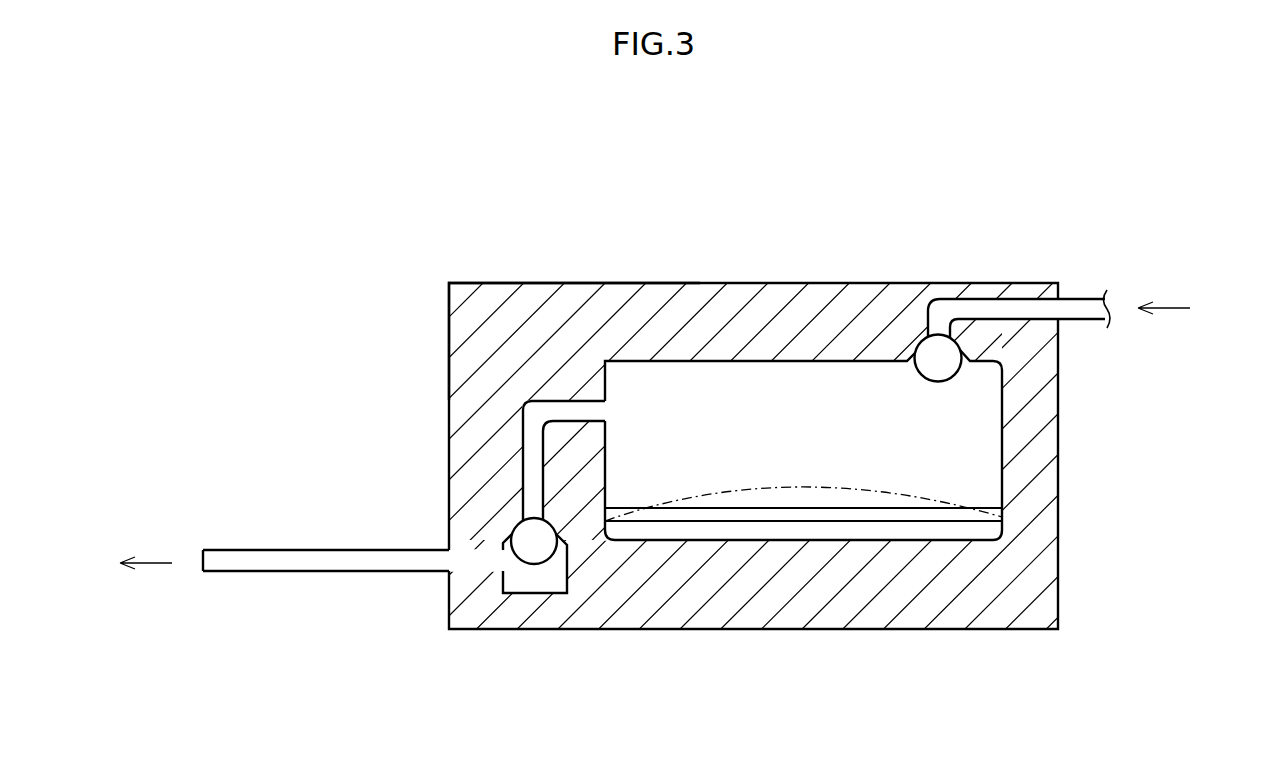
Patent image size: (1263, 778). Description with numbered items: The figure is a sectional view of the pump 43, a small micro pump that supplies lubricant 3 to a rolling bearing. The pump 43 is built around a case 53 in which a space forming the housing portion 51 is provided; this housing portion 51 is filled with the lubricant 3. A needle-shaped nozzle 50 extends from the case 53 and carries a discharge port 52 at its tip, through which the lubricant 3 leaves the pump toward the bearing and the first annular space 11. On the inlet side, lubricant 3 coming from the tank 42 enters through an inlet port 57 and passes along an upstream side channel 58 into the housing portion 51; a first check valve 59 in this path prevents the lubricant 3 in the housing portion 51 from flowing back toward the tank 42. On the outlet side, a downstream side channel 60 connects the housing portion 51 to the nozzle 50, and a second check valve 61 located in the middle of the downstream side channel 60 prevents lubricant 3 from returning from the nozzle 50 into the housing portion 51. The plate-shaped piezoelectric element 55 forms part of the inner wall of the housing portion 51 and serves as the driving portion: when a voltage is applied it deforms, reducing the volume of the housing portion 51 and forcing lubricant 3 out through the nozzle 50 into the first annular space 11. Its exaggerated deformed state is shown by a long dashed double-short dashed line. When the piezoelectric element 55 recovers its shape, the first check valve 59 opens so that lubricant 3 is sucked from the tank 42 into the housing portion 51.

The lubricant 3 is at (792, 449).
The first annular space 11 is at (70, 577).
The tank 42 is at (1208, 322).
The pump 43 is at (834, 270).
The nozzle 50 is at (265, 560).
The housing portion 51 is at (700, 400).
The discharge port 52 is at (203, 560).
The case 53 is at (526, 355).
The piezoelectric element 55 is at (810, 515).
The inlet port 57 is at (1074, 319).
The upstream side channel 58 is at (1013, 316).
The first check valve 59 is at (968, 389).
The downstream side channel 60 is at (533, 472).
The second check valve 61 is at (561, 578).